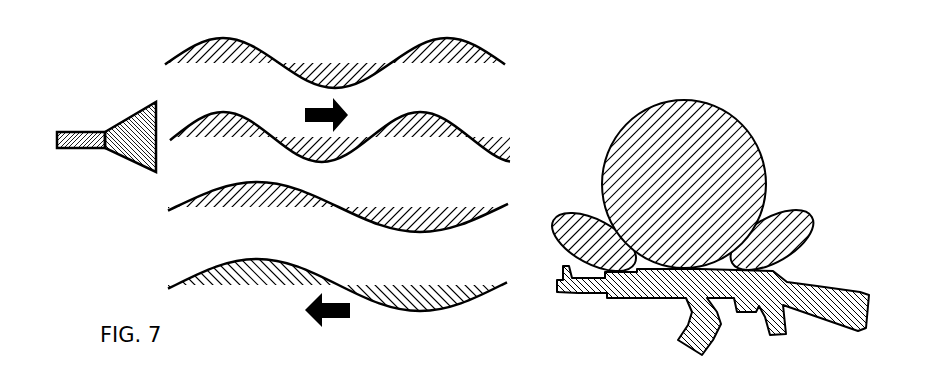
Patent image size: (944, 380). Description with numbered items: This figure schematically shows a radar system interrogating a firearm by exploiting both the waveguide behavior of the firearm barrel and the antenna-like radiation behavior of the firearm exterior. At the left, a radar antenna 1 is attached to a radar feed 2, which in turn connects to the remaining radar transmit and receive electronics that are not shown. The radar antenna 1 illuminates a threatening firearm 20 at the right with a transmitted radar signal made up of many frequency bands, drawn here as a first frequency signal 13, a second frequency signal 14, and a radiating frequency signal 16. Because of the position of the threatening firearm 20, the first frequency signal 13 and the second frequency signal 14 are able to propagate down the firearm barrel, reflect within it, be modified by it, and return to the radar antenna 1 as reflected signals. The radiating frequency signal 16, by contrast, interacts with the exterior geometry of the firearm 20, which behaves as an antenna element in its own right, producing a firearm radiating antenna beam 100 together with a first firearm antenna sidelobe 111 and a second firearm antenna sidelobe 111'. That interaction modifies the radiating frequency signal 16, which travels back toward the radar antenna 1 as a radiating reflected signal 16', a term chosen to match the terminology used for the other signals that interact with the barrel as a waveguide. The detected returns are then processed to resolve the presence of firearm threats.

The radar antenna 1 is at (137, 122).
The radar feed 2 is at (84, 135).
The first frequency signal 13 is at (487, 62).
The second frequency signal 14 is at (482, 140).
The radiating frequency signal 16 is at (335, 203).
The radiating reflected signal 16' is at (334, 286).
The threatening firearm 20 is at (563, 277).
The firearm radiating antenna beam 100 is at (707, 102).
The first firearm antenna sidelobe 111 is at (592, 231).
The second firearm antenna sidelobe 111' is at (770, 231).